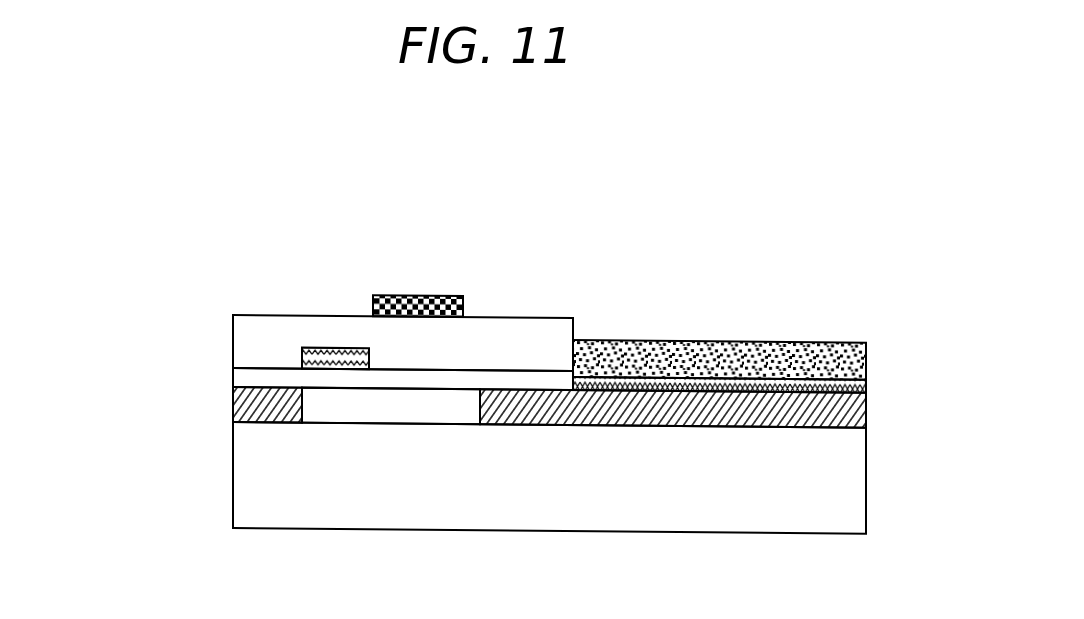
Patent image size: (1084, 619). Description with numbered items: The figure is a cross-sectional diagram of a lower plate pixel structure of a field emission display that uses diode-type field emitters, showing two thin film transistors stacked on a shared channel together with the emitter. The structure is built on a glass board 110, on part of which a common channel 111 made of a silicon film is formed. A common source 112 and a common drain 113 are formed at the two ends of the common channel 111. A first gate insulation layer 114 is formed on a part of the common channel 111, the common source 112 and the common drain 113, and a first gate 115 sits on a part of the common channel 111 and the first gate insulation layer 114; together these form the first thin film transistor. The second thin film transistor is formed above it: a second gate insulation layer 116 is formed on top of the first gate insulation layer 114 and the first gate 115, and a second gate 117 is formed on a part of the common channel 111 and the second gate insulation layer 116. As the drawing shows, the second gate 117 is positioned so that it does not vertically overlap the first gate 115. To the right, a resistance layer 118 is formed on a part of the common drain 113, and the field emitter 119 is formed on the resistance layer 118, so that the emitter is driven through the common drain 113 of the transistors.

The glass board 110 is at (243, 510).
The common channel 111 is at (402, 412).
The common source 112 is at (283, 405).
The common drain 113 is at (547, 413).
The first gate insulation layer 114 is at (245, 375).
The first gate 115 is at (318, 348).
The second gate insulation layer 116 is at (533, 338).
The second gate 117 is at (408, 294).
The resistance layer 118 is at (846, 375).
The field emitter 119 is at (748, 358).